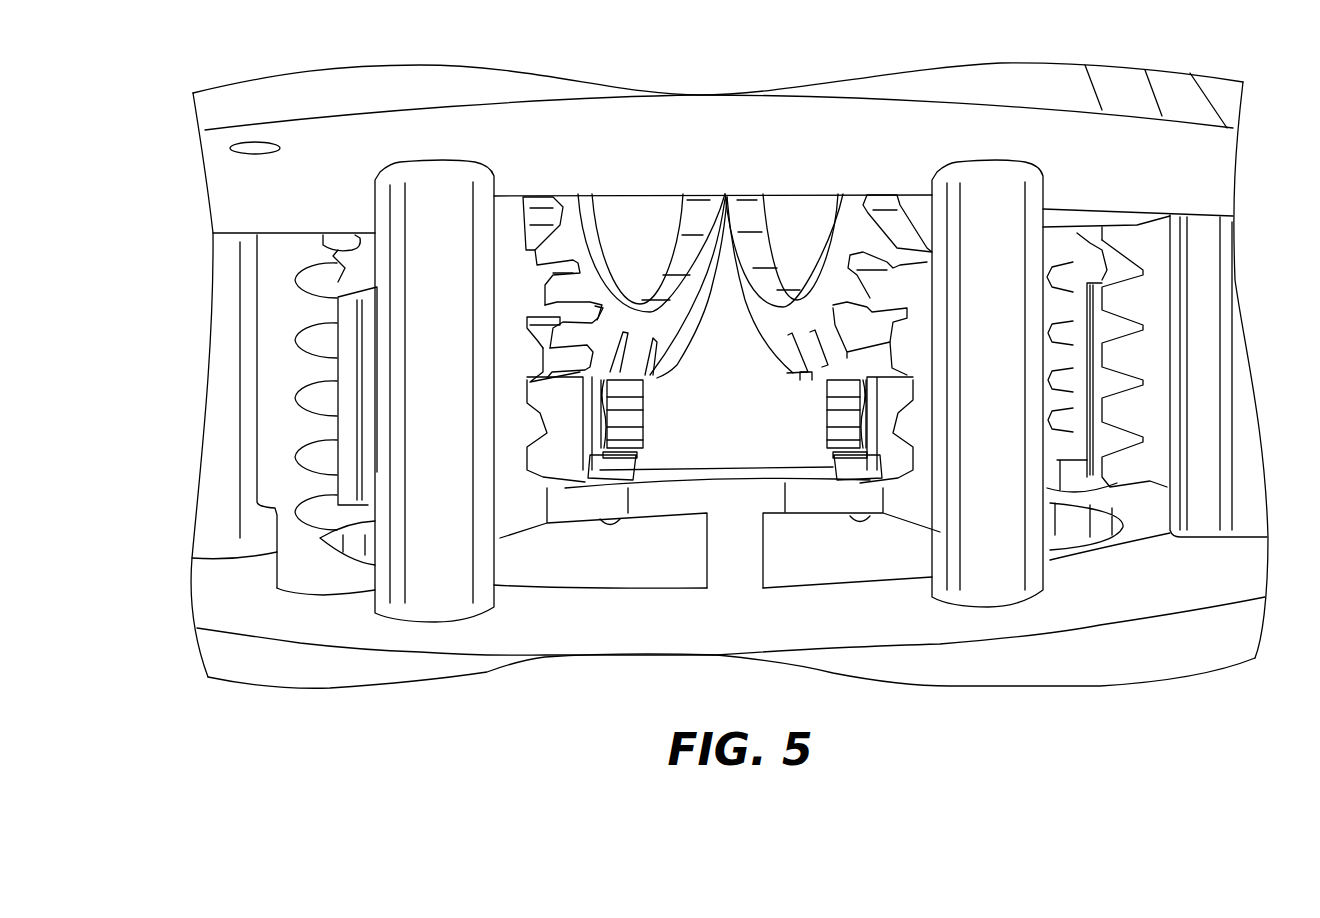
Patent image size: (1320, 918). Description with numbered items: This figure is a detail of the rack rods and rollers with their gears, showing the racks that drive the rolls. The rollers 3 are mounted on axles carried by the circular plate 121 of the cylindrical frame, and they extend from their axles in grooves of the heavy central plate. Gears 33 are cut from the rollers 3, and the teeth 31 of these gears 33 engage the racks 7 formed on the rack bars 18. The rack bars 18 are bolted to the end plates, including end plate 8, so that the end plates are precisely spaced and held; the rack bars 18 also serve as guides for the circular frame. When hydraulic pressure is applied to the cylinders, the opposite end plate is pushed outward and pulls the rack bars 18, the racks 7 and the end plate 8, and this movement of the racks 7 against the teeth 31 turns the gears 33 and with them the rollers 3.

The circular plate 121 is at (255, 203).
The rollers 3 is at (707, 338).
The gears 33 is at (663, 383).
The teeth 31 is at (810, 370).
The racks 7 is at (550, 442).
The end plate 8 is at (598, 613).
The rack bars 18 is at (990, 527).